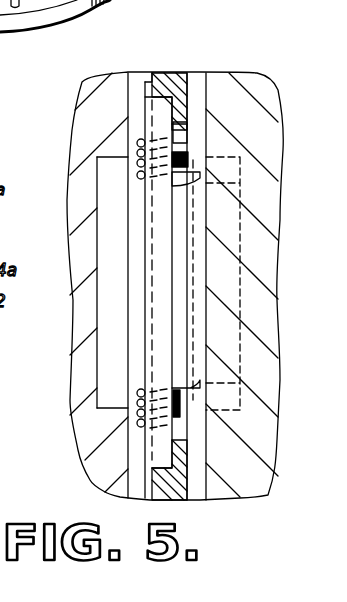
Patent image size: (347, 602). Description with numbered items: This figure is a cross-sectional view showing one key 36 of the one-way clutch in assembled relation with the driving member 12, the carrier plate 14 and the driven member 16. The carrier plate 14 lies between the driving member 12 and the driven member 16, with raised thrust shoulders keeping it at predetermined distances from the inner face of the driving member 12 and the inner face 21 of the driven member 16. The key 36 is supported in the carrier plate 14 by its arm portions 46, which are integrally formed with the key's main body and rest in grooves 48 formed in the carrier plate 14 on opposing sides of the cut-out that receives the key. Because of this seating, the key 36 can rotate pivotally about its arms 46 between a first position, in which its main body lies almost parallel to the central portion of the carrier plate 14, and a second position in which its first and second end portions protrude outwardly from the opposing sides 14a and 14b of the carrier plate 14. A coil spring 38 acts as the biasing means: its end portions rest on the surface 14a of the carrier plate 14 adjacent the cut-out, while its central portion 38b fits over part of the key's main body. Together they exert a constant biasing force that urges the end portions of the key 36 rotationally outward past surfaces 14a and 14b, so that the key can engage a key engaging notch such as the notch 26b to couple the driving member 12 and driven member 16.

The driving member 12 is at (105, 76).
The carrier plate 14 is at (173, 72).
The first side surface of carrier plate 14a is at (140, 72).
The second side surface of carrier plate 14b is at (200, 72).
The driven member 16 is at (255, 478).
The inner face of driven member 21 is at (231, 73).
The key engaging notch 26b is at (108, 353).
The key 36 is at (200, 235).
The coil spring 38 is at (203, 92).
The central portion of coil spring 38b is at (191, 144).
The arm portions 46 is at (147, 125).
The grooves 48 is at (152, 102).